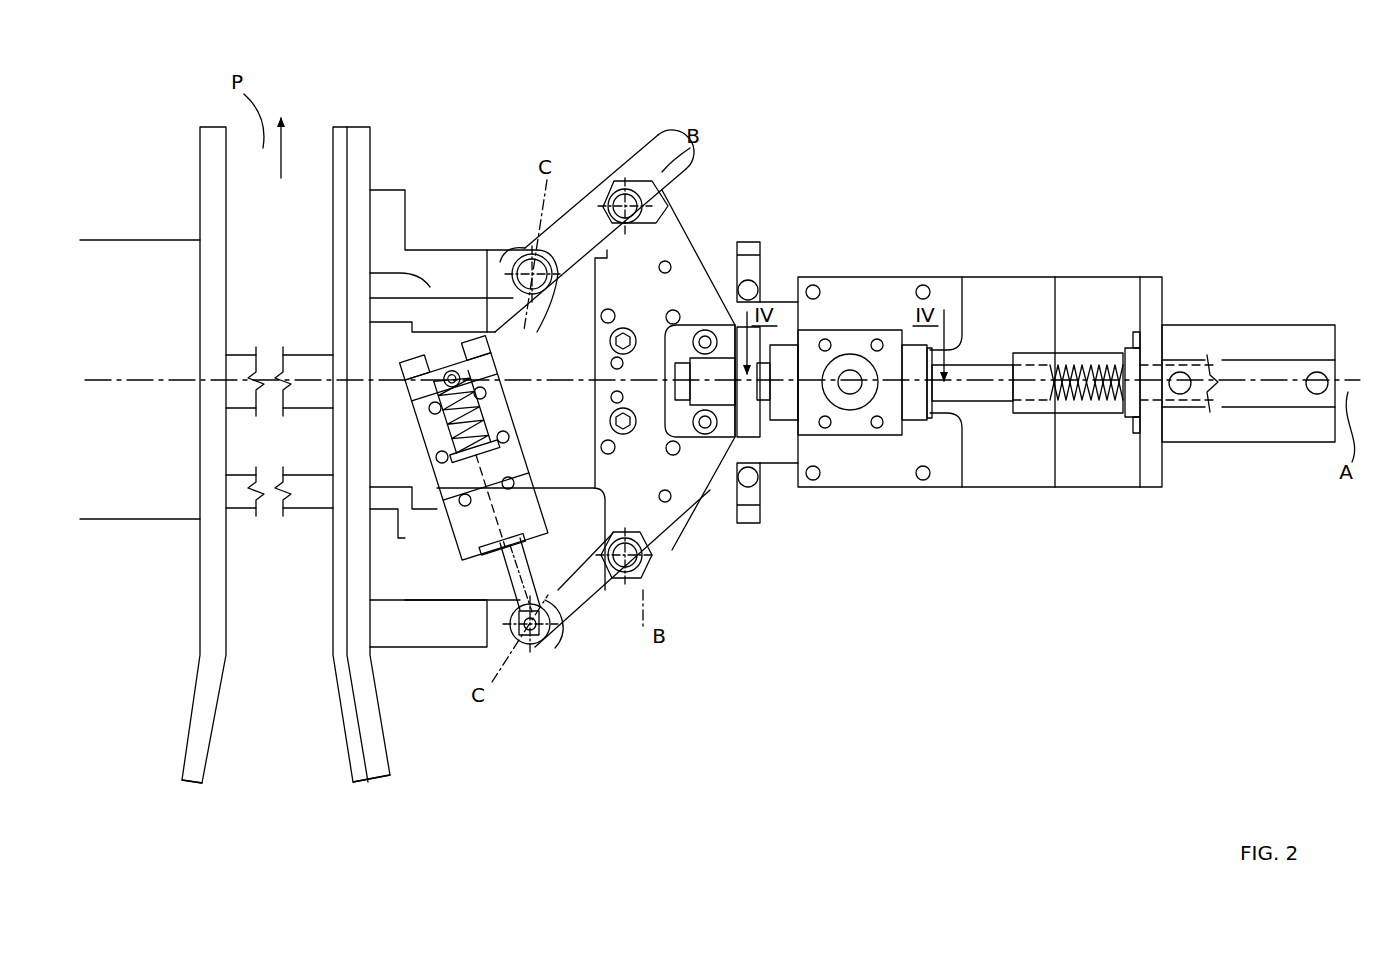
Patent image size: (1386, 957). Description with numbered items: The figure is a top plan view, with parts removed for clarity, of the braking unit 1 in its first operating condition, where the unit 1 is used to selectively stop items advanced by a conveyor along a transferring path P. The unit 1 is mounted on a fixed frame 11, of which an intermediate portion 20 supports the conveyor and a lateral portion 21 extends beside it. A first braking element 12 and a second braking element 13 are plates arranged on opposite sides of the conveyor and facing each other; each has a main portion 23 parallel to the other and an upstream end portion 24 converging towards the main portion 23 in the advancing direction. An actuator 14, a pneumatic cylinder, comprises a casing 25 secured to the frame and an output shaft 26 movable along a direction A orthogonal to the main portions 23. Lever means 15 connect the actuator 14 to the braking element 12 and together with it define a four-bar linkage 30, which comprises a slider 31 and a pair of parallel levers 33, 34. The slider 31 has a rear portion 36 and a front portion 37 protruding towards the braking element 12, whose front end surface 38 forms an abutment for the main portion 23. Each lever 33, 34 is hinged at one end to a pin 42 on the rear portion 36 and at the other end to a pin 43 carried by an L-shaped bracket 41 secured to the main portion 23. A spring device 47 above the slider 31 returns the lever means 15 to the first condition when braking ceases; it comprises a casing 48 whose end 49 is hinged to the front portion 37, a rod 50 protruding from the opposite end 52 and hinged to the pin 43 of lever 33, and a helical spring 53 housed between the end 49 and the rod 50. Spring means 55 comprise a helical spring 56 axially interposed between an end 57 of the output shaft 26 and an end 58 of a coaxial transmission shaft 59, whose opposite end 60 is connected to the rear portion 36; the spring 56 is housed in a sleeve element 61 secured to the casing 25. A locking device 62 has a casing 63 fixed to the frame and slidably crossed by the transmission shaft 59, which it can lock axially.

The braking unit 1 is at (1042, 163).
The fixed frame 11 is at (750, 527).
The first braking element 12 is at (356, 165).
The second braking element 13 is at (212, 184).
The actuator 14 is at (1258, 322).
The lever means 15 is at (567, 190).
The intermediate portion 20 is at (238, 492).
The lateral portion 21 is at (146, 258).
The main portions 23 is at (355, 176).
The upstream end portions 24 is at (184, 775).
The casing 25 is at (1283, 440).
The output shaft 26 is at (1187, 328).
The four-bar linkage 30 is at (630, 636).
The slider 31 is at (666, 513).
The lever 33 is at (588, 600).
The lever 34 is at (587, 197).
The rear portion 36 is at (690, 270).
The front portion 37 is at (517, 263).
The front end surface 38 is at (375, 363).
The bracket 41 is at (400, 203).
The pin 42 is at (662, 206).
The pin 43 is at (522, 262).
The spring device 47 is at (416, 476).
The casing 48 is at (467, 547).
The end 49 is at (462, 370).
The rod 50 is at (500, 650).
The end 52 is at (503, 565).
The helical spring 53 is at (455, 420).
The spring means 55 is at (1089, 424).
The helical spring 56 is at (1100, 360).
The end 57 is at (1147, 408).
The end 58 is at (1048, 415).
The transmission shaft 59 is at (980, 395).
The end 60 is at (674, 395).
The sleeve element 61 is at (1116, 412).
The locking device 62 is at (888, 437).
The casing 63 is at (880, 354).